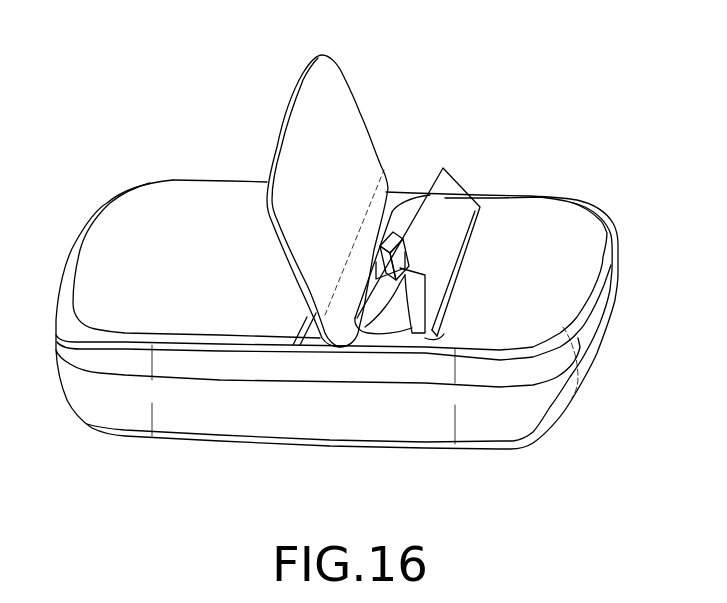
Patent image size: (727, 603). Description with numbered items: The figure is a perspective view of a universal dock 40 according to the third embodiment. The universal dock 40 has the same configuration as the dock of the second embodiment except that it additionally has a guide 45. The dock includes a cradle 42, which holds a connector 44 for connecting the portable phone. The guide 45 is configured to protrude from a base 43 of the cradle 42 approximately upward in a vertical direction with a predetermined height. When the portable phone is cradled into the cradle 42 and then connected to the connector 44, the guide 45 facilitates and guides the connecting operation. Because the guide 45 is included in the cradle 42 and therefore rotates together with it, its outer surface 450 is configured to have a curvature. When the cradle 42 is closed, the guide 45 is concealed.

The universal dock 40 is at (96, 117).
The cradle 42 is at (272, 70).
The base 43 is at (392, 343).
The connector 44 is at (384, 232).
The guide 45 is at (450, 207).
The outer surface 450 is at (455, 197).